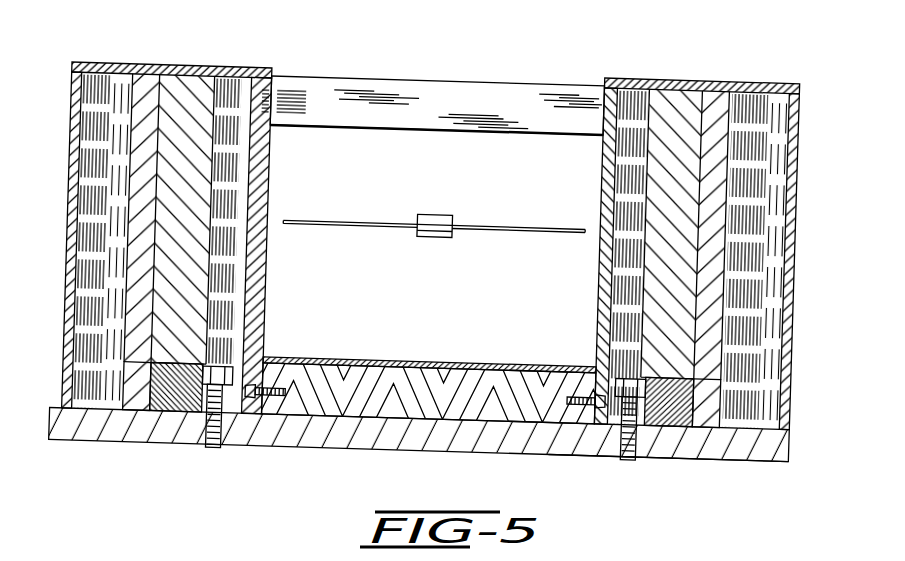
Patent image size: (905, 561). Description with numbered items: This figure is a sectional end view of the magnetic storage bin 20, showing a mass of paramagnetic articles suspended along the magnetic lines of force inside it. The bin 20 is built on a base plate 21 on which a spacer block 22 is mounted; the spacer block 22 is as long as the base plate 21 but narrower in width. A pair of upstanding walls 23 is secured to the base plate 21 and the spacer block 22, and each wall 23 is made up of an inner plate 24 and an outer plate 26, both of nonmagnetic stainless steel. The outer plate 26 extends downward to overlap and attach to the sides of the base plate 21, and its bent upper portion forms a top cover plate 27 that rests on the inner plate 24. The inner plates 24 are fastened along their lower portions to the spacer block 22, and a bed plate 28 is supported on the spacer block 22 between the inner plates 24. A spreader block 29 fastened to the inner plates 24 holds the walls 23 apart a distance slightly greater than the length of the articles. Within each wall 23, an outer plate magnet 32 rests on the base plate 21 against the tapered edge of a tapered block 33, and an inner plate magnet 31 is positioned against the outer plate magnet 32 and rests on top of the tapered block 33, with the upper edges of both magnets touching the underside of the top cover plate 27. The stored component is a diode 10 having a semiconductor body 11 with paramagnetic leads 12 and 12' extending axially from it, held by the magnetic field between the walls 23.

The diode 10 is at (438, 228).
The semiconductor body 11 is at (441, 212).
The paramagnetic lead 12 is at (351, 193).
The paramagnetic lead 12' is at (519, 199).
The bin 20 is at (752, 445).
The base plate 21 is at (699, 438).
The spacer block 22 is at (497, 368).
The upstanding wall 23 is at (71, 198).
The inner plate 24 is at (268, 268).
The outer plate 26 is at (78, 335).
The top cover plate 27 is at (105, 61).
The bed plate 28 is at (392, 349).
The spreader block 29 is at (511, 79).
The inner plate magnet 31 is at (194, 79).
The outer plate magnet 32 is at (130, 408).
The tapered block 33 is at (182, 410).